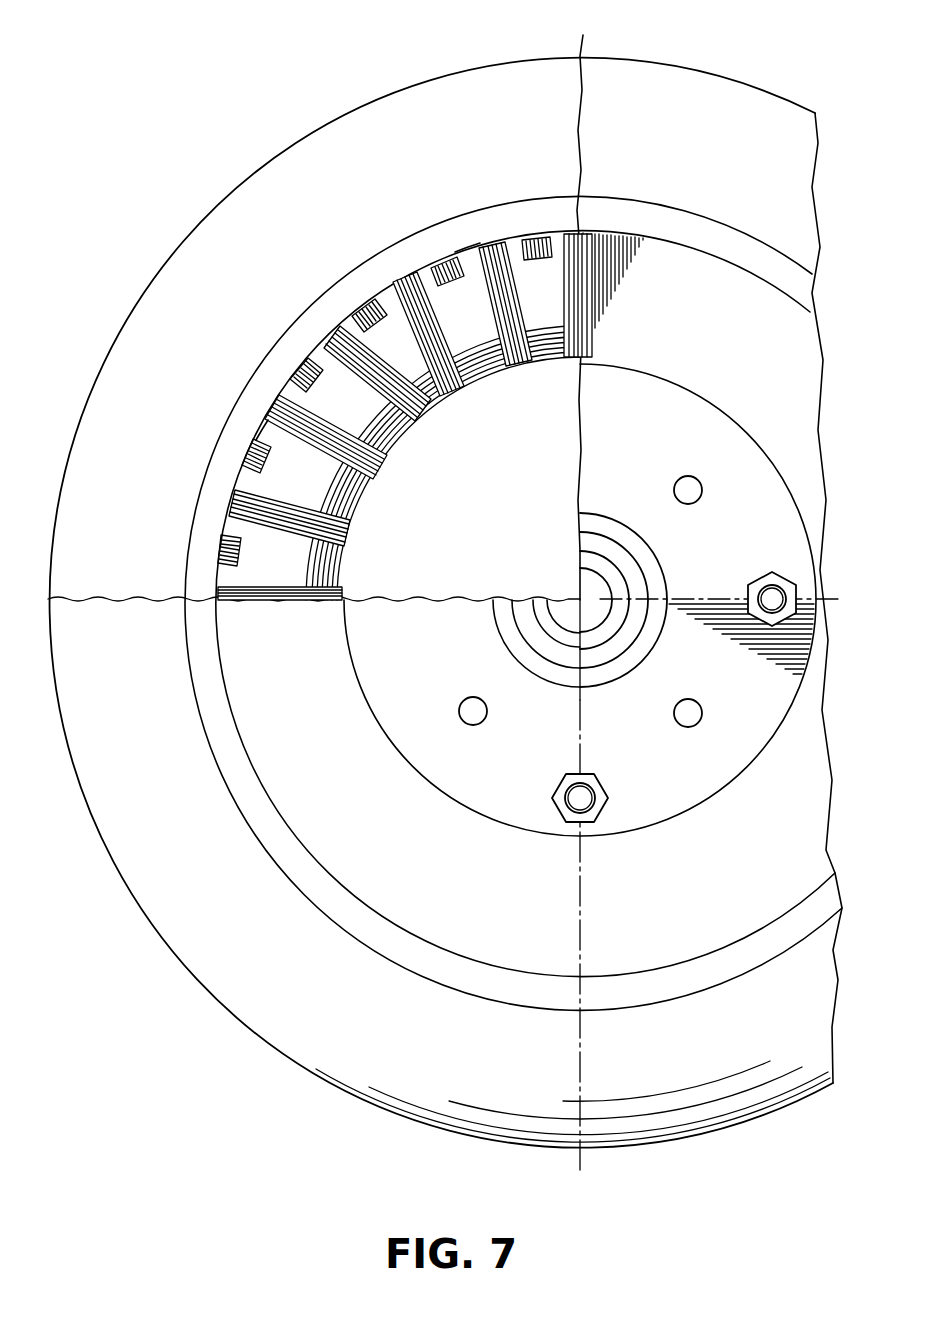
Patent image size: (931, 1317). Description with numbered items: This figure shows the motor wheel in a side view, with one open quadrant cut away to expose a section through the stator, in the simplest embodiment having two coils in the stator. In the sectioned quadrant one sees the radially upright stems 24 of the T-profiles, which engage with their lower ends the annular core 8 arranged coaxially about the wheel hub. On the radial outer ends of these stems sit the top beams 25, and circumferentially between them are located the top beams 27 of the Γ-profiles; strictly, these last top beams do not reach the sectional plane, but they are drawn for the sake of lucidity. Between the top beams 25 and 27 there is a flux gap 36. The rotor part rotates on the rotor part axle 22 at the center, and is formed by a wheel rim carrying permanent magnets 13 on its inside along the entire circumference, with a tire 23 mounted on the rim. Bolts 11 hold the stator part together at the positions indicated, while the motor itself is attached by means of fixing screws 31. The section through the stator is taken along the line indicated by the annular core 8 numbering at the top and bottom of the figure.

The annular core 8 is at (515, 428).
The bolts 11 is at (772, 605).
The permanent magnets 13 is at (298, 862).
The rotor part axle 22 is at (530, 645).
The tire 23 is at (250, 1030).
The stems of the T-profiles 24 is at (430, 342).
The top beams of the T-profiles 25 is at (402, 268).
The top beams of the Γ-profiles 27 is at (446, 262).
The fixing screws 31 is at (700, 485).
The flux gap 36 is at (463, 260).